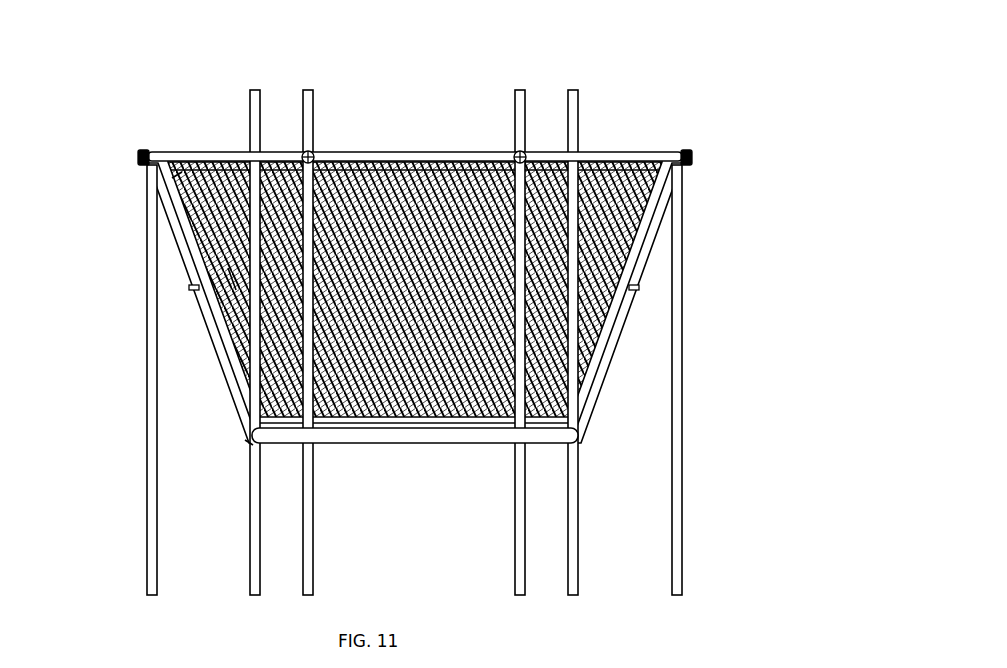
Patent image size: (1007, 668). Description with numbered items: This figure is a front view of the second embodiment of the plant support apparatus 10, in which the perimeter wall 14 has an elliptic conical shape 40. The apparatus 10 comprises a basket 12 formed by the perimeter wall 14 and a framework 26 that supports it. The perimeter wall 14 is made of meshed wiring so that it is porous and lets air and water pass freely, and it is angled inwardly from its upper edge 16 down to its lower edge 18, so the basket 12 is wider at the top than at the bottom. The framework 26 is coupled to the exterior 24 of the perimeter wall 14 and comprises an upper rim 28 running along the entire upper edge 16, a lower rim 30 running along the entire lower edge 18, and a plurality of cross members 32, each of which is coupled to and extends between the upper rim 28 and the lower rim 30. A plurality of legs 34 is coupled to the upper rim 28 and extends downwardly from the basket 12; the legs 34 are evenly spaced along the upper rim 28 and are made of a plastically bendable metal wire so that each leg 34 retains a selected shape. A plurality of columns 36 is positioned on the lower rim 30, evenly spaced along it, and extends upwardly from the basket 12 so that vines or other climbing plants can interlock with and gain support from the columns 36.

The plant support apparatus 10 is at (680, 75).
The basket 12 is at (243, 470).
The perimeter wall 14 is at (627, 205).
The upper edge 16 is at (178, 190).
The lower edge 18 is at (563, 388).
The exterior 24 is at (232, 278).
The framework 26 is at (695, 135).
The upper rim 28 is at (398, 152).
The lower rim 30 is at (397, 447).
The cross member 32 is at (176, 242).
The leg 34 is at (150, 536).
The column 36 is at (255, 118).
The elliptic conical shape 40 is at (159, 125).